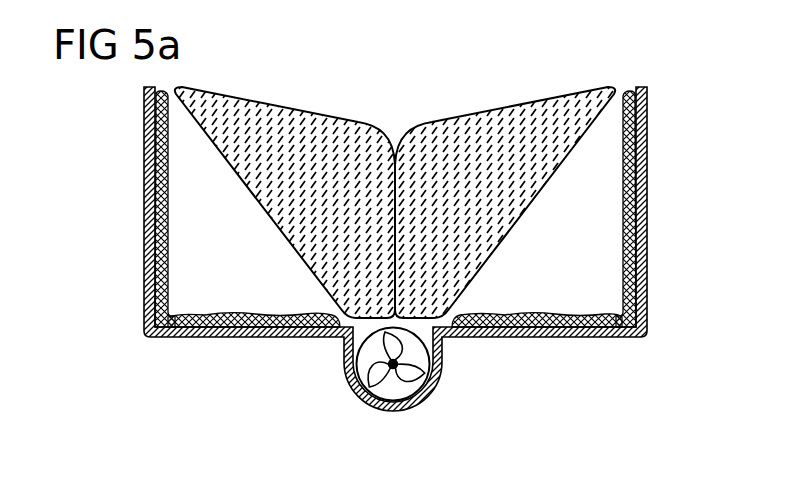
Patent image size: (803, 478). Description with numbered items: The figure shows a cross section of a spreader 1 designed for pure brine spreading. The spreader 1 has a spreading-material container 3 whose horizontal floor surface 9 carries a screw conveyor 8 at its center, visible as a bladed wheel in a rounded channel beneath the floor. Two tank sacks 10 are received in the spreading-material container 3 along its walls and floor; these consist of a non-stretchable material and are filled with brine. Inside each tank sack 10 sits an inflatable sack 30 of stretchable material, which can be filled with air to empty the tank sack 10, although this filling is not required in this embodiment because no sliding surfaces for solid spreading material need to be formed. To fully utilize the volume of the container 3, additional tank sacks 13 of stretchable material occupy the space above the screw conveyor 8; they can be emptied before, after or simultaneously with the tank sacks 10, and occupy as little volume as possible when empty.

The spreader 1 is at (107, 138).
The spreading-material container 3 is at (144, 281).
The inflatable sack 30 is at (144, 216).
The additional tank sack 13 is at (437, 122).
The tank sack 10 is at (233, 303).
The horizontal floor surface 9 is at (270, 338).
The screw conveyor 8 is at (412, 379).